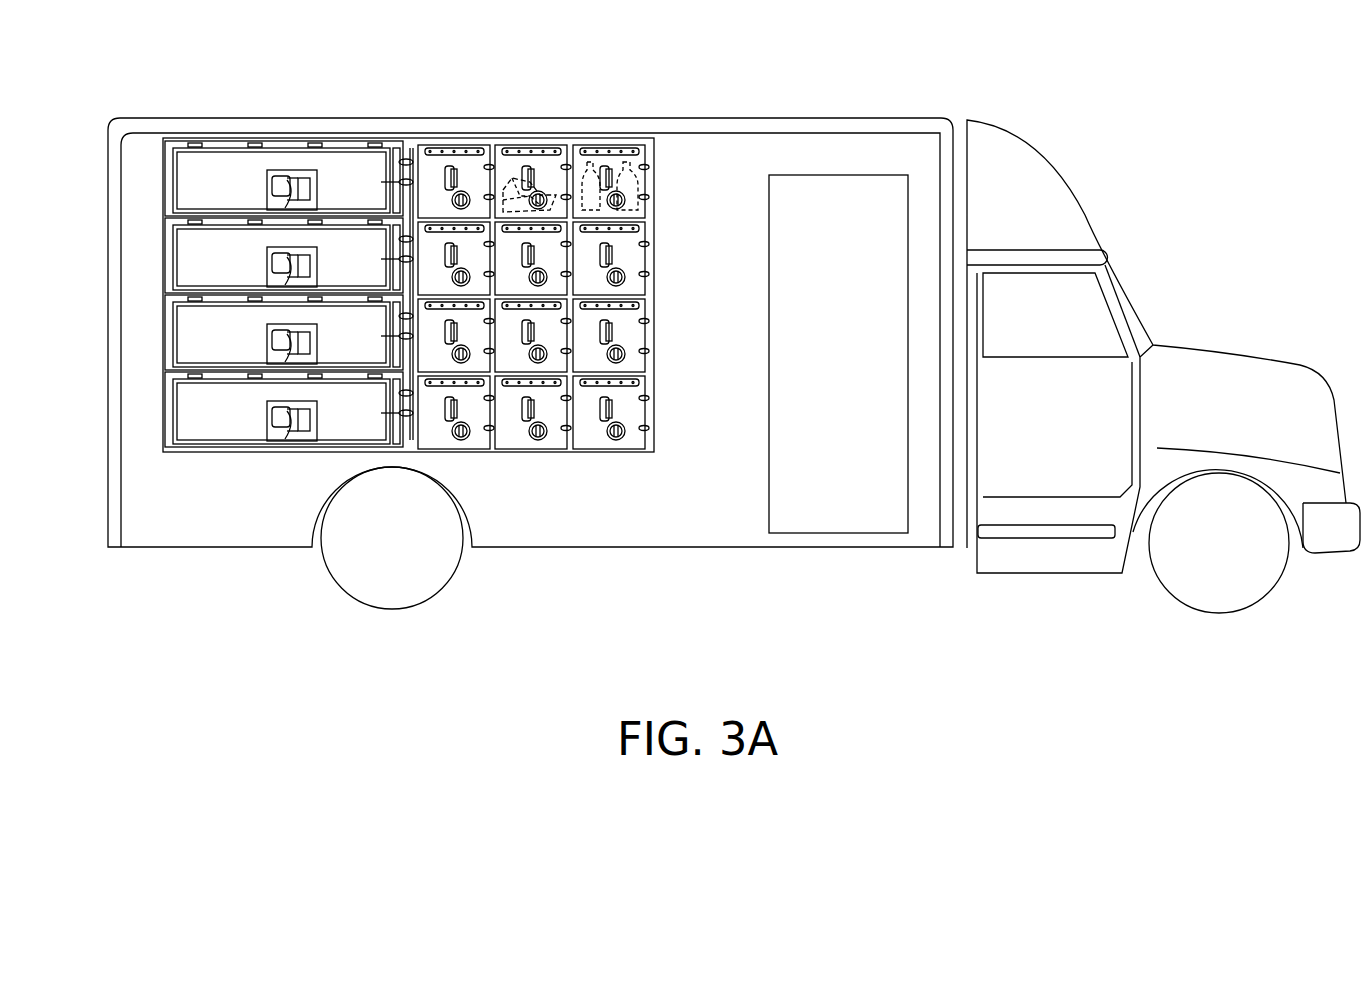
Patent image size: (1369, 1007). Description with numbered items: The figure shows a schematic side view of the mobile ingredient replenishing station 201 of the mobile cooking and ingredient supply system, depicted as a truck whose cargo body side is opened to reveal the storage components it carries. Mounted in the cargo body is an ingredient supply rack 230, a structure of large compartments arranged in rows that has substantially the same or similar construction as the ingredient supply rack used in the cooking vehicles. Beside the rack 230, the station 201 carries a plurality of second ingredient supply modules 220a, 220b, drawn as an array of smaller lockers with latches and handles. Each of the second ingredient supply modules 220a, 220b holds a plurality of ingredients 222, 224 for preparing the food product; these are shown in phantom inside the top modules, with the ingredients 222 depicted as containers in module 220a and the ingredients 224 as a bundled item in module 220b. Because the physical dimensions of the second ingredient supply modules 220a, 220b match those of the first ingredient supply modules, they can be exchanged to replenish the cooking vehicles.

The mobile ingredient replenishing station 201 is at (1342, 711).
The ingredient supply rack 230 is at (345, 140).
The second ingredient supply module 220a is at (622, 152).
The second ingredient supply module 220b is at (542, 150).
The ingredient 222 is at (592, 145).
The ingredient 224 is at (510, 148).